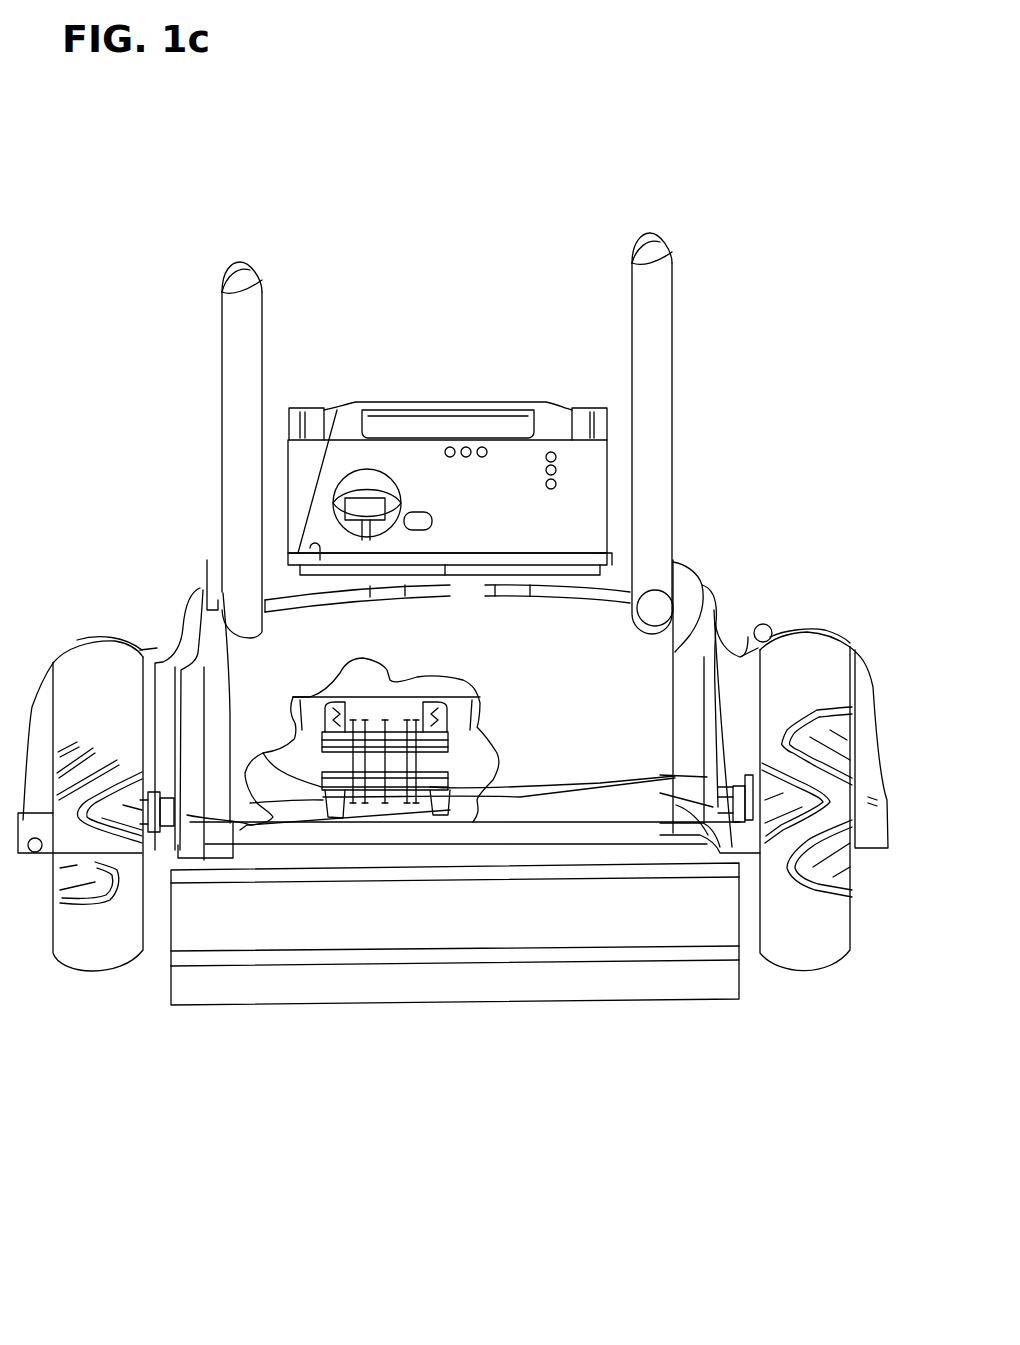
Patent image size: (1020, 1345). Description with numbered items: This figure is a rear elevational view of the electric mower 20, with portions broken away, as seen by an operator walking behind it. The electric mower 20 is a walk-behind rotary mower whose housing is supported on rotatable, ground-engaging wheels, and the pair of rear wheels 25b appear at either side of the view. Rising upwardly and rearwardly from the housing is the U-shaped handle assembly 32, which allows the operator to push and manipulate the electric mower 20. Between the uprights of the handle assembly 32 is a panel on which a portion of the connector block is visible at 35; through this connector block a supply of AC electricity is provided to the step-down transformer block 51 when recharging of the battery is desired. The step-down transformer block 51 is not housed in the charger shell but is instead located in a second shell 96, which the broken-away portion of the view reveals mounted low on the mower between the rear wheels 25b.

The electric mower 20 is at (673, 1025).
The rear wheel 25b is at (88, 968).
The U-shaped handle assembly 32 is at (650, 418).
The connector block portion 35 is at (372, 480).
The step-down transformer block 51 is at (370, 760).
The second shell 96 is at (417, 722).